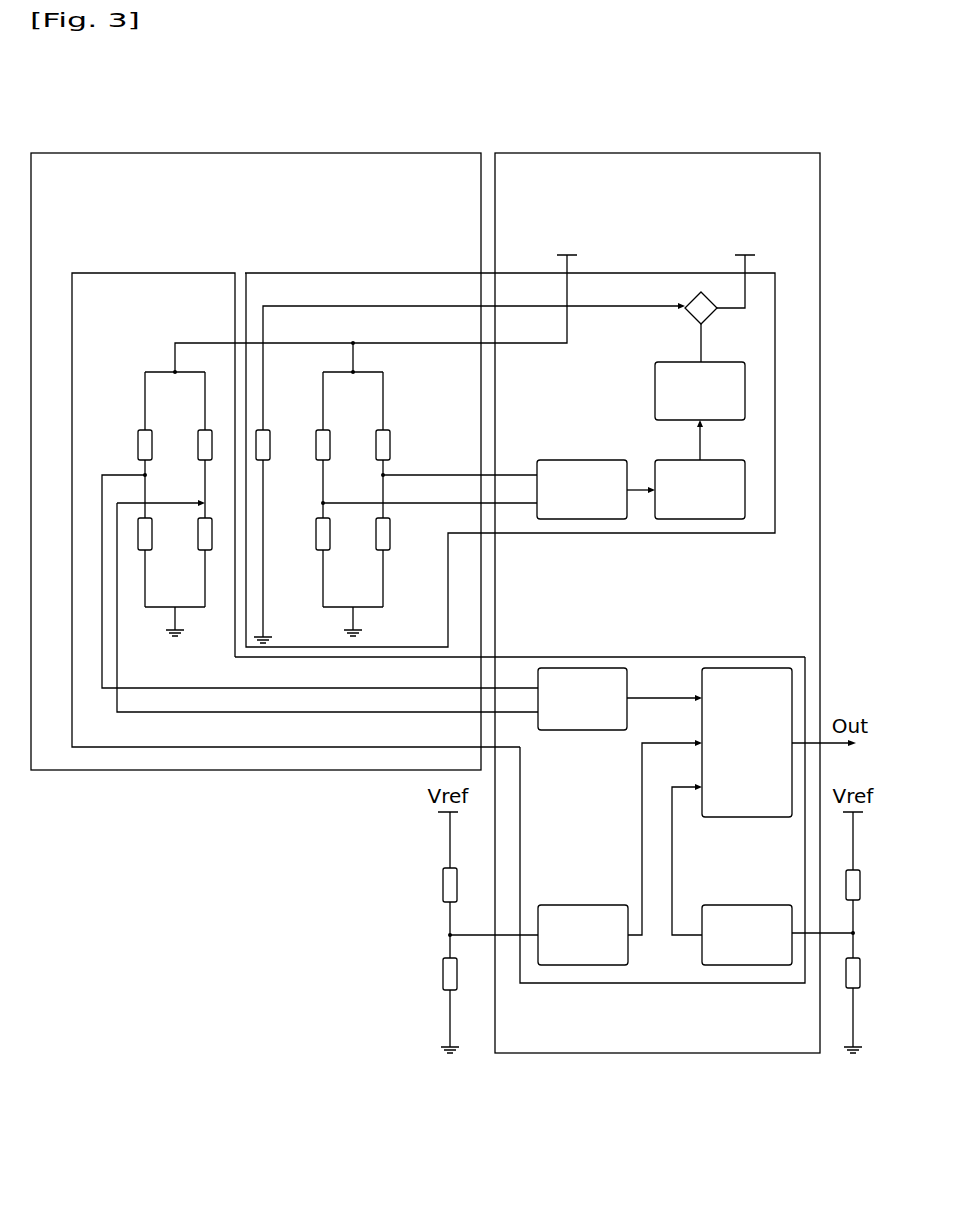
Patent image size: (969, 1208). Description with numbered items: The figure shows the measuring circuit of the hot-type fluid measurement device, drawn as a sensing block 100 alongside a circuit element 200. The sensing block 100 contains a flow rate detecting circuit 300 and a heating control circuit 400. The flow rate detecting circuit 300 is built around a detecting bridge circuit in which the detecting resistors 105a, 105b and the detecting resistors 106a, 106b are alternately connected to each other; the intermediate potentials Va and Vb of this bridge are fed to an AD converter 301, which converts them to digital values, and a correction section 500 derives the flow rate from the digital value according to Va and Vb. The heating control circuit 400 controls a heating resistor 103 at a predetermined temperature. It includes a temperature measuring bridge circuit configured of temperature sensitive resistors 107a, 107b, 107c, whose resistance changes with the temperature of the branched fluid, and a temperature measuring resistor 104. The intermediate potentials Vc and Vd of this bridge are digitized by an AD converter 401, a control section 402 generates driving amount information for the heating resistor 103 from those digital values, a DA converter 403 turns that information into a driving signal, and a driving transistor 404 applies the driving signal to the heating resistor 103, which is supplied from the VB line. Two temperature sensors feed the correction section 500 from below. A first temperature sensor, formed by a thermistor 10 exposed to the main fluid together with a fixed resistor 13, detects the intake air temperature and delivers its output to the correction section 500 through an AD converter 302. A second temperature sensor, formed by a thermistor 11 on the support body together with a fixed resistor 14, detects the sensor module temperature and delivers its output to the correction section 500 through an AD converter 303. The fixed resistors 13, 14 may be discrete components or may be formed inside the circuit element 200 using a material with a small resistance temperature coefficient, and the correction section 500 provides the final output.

The sensor unit 100 is at (268, 153).
The circuit element 200 is at (624, 153).
The flow rate detecting circuit 300 is at (316, 474).
The heating control circuit 400 is at (520, 429).
The heating resistor 103 is at (270, 445).
The temperature measuring resistor 104 is at (331, 445).
The detecting resistor 105a is at (139, 447).
The detecting resistor 105b is at (199, 541).
The detecting resistor 106a is at (139, 532).
The detecting resistor 106b is at (199, 446).
The temperature sensitive resistor 107a is at (331, 543).
The temperature sensitive resistor 107b is at (391, 445).
The temperature sensitive resistor 107c is at (391, 539).
The AD converter 401 is at (582, 489).
The control section 402 is at (700, 489).
The DA converter 403 is at (700, 391).
The driving transistor 404 is at (685, 305).
The AD converter 301 is at (582, 699).
The AD converter 302 is at (583, 935).
The AD converter 303 is at (747, 935).
The correction section 500 is at (747, 742).
The thermistor 10 is at (443, 978).
The thermistor 11 is at (846, 975).
The fixed resistor 13 is at (443, 883).
The fixed resistor 14 is at (846, 886).